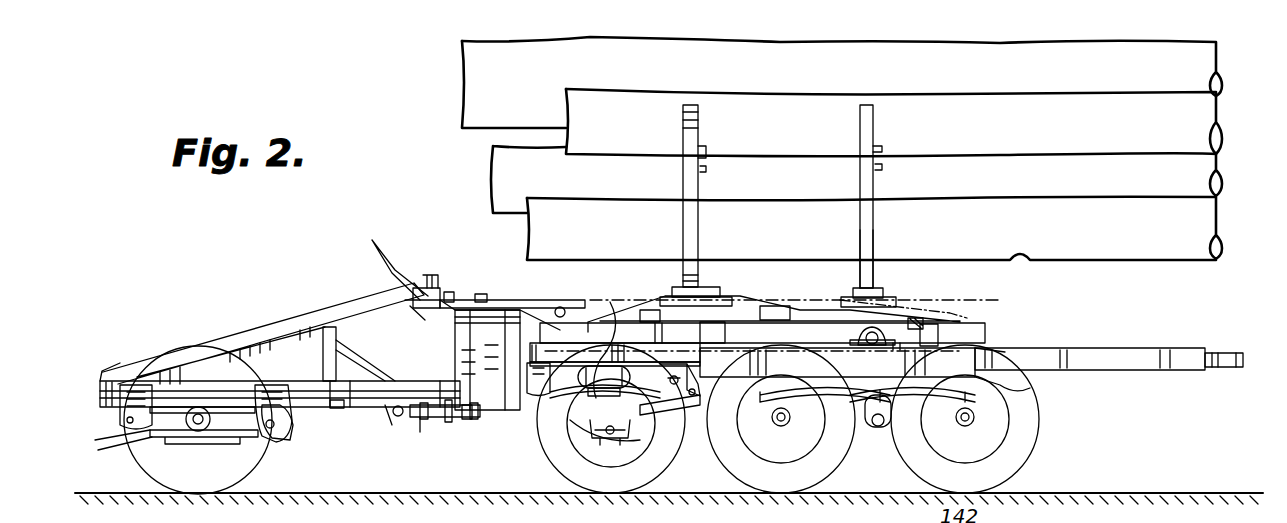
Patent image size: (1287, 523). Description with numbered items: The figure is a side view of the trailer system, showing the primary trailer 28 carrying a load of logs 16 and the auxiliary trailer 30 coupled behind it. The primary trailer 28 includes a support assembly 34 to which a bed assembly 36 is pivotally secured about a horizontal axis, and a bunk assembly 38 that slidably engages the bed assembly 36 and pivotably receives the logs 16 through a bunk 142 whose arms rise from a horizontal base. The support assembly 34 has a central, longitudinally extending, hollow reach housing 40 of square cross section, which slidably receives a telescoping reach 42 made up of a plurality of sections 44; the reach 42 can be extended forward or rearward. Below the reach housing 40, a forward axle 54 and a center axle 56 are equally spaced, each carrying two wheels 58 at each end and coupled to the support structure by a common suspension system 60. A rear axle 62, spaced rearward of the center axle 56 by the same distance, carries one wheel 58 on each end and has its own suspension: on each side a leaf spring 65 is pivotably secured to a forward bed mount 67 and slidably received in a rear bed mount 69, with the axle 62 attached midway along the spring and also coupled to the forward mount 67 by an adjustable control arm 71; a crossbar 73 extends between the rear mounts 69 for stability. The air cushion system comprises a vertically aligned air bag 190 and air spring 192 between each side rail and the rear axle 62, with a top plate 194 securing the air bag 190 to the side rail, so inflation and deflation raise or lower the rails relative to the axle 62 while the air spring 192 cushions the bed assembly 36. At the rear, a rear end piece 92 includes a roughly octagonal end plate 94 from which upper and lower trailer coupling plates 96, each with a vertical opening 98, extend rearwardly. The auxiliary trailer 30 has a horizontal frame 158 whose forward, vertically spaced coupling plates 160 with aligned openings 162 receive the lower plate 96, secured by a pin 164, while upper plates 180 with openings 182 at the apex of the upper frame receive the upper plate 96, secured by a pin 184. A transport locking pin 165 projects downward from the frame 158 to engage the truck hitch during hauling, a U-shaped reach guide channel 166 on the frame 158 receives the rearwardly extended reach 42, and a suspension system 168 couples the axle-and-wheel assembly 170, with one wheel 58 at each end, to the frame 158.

The logs 16 is at (495, 64).
The primary trailer 28 is at (958, 300).
The auxiliary trailer 30 is at (256, 298).
The support assembly 34 is at (1020, 348).
The bed assembly 36 is at (940, 336).
The bunk assembly 38 is at (748, 302).
The reach housing 40 is at (1032, 390).
The telescoping reach 42 is at (1160, 330).
The sections 44 is at (1218, 370).
The forward axle 54 is at (1040, 426).
The center axle 56 is at (887, 422).
The wheels 58 is at (560, 477).
The suspension system 60 is at (886, 408).
The rear axle 62 is at (585, 432).
The leaf spring 65 is at (572, 415).
The forward bed mount 67 is at (700, 380).
The rear bed mount 69 is at (536, 405).
The adjustable control arm 71 is at (702, 432).
The crossbar 73 is at (456, 364).
The rear end piece 92 is at (500, 301).
The end plate 94 is at (462, 336).
The trailer coupling plates 96 is at (481, 296).
The opening 98 is at (452, 292).
The bunk 142 is at (702, 240).
The frame 158 is at (352, 405).
The trailer coupling plates 160 is at (410, 408).
The openings 162 is at (432, 425).
The pin 164 is at (445, 420).
The transport locking pin 165 is at (415, 422).
The reach guide channel 166 is at (334, 402).
The suspension system 168 is at (175, 443).
The axle-and-wheel assembly 170 is at (165, 467).
The upper plates 180 is at (384, 259).
The openings 182 is at (428, 314).
The pin 184 is at (437, 288).
The air bag 190 is at (635, 395).
The air spring 192 is at (594, 410).
The top plate 194 is at (613, 335).